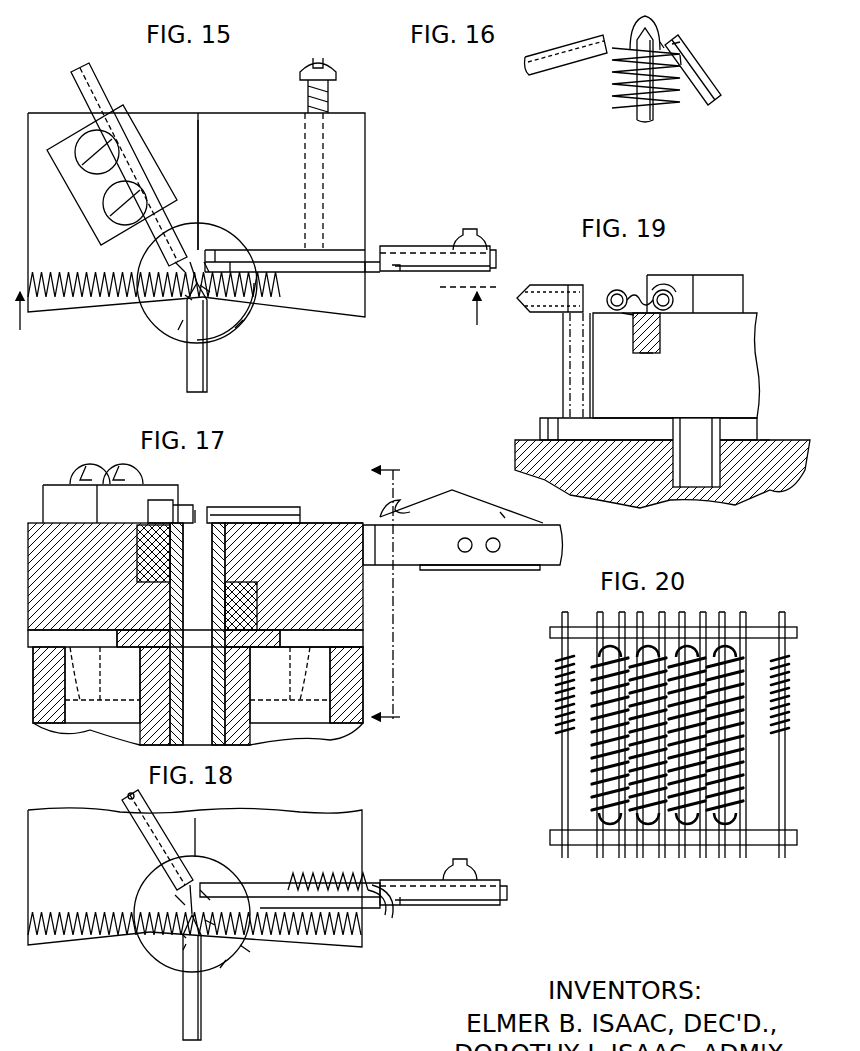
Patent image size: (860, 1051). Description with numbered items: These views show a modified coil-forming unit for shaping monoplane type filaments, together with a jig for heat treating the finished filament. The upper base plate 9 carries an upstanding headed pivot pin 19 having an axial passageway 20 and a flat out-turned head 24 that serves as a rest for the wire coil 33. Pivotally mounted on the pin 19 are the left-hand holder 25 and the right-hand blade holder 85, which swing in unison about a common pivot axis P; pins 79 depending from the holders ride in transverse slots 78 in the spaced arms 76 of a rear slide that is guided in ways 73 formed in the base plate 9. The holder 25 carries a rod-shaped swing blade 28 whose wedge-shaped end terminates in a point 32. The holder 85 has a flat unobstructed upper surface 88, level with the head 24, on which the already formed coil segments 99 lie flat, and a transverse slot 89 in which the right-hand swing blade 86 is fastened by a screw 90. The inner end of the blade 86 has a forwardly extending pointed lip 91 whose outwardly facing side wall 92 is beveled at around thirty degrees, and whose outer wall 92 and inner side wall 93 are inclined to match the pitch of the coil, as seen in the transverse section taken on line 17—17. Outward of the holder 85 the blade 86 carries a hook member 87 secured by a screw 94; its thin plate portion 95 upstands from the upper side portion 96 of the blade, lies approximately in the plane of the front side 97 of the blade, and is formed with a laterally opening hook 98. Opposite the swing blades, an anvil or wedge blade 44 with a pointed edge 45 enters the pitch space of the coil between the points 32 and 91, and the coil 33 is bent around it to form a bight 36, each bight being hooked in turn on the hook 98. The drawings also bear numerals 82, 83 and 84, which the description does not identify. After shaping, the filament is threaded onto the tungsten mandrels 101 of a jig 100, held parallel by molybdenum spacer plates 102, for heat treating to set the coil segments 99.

In FIG. 19, the upper base plate 9 is at (762, 492).
In FIG. 15, the section line 17— 17 is at (254, 320).
In FIG. 17, the pivot pin 19 is at (222, 742).
In FIG. 17, the axial passageway 20 is at (197, 634).
In FIG. 15, the head 24 is at (187, 345).
In FIG. 17, the head 24 is at (248, 510).
In FIG. 18, the head 24 is at (245, 951).
In FIG. 15, the holder 25 is at (52, 112).
In FIG. 17, the holder 25 is at (33, 522).
In FIG. 18, the holder 25 is at (75, 815).
In FIG. 15, the swing blade 28 is at (165, 250).
In FIG. 16, the swing blade 28 is at (557, 62).
In FIG. 17, the swing blade 28 is at (160, 500).
In FIG. 18, the swing blade 28 is at (140, 833).
In FIG. 15, the point 32 is at (195, 290).
In FIG. 17, the point 32 is at (197, 634).
In FIG. 18, the point 32 is at (175, 896).
In FIG. 15, the wire coil 33 is at (73, 300).
In FIG. 16, the wire coil 33 is at (615, 96).
In FIG. 18, the wire coil 33 is at (194, 923).
In FIG. 16, the bight 36 is at (643, 26).
In FIG. 19, the bight 36 is at (634, 315).
In FIG. 18, the bight 36 is at (382, 908).
In FIG. 15, the anvil 44 is at (208, 371).
In FIG. 16, the anvil 44 is at (652, 106).
In FIG. 19, the anvil 44 is at (547, 287).
In FIG. 18, the anvil 44 is at (203, 1004).
In FIG. 15, the edge 45 is at (190, 300).
In FIG. 19, the edge 45 is at (590, 294).
In FIG. 18, the edge 45 is at (185, 936).
In FIG. 17, the ways 73 is at (75, 730).
In FIG. 19, the arms 76 is at (755, 446).
In FIG. 17, the arms 76 is at (103, 712).
In FIG. 19, the slots 78 is at (720, 476).
In FIG. 17, the slots 78 is at (70, 648).
In FIG. 19, the pins 79 is at (722, 431).
In FIG. 17, the pins 79 is at (103, 642).
In FIG. 15, the knife portion 82 is at (178, 330).
In FIG. 19, the knife portion 82 is at (575, 288).
In FIG. 18, the knife portion 82 is at (183, 951).
In FIG. 20, the end spring 83 is at (557, 700).
In FIG. 20, the coil spring 84 is at (590, 788).
In FIG. 15, the blade holder 85 is at (367, 143).
In FIG. 19, the blade holder 85 is at (745, 365).
In FIG. 17, the blade holder 85 is at (320, 525).
In FIG. 18, the blade holder 85 is at (352, 826).
In FIG. 15, the swing blade 86 is at (255, 250).
In FIG. 16, the swing blade 86 is at (709, 73).
In FIG. 19, the swing blade 86 is at (661, 336).
In FIG. 17, the swing blade 86 is at (283, 506).
In FIG. 18, the swing blade 86 is at (262, 884).
In FIG. 15, the hook member 87 is at (421, 246).
In FIG. 17, the hook member 87 is at (471, 497).
In FIG. 18, the hook member 87 is at (441, 877).
In FIG. 15, the upper surface 88 is at (256, 128).
In FIG. 19, the upper surface 88 is at (745, 301).
In FIG. 17, the upper surface 88 is at (297, 523).
In FIG. 15, the slot 89 is at (370, 262).
In FIG. 19, the slot 89 is at (652, 354).
In FIG. 15, the screw 90 is at (326, 104).
In FIG. 15, the lip 91 is at (205, 290).
In FIG. 16, the lip 91 is at (663, 40).
In FIG. 17, the lip 91 is at (212, 523).
In FIG. 18, the lip 91 is at (215, 926).
In FIG. 15, the outer side wall 92 is at (210, 262).
In FIG. 16, the outer side wall 92 is at (682, 56).
In FIG. 17, the outer side wall 92 is at (215, 520).
In FIG. 18, the outer side wall 92 is at (205, 906).
In FIG. 15, the inner side wall 93 is at (200, 255).
In FIG. 16, the inner side wall 93 is at (681, 43).
In FIG. 17, the inner side wall 93 is at (200, 523).
In FIG. 18, the inner side wall 93 is at (195, 886).
In FIG. 15, the screw 94 is at (478, 235).
In FIG. 17, the screw 94 is at (465, 553).
In FIG. 18, the screw 94 is at (456, 878).
In FIG. 15, the plate portion 95 is at (430, 272).
In FIG. 17, the plate portion 95 is at (440, 506).
In FIG. 18, the plate portion 95 is at (462, 906).
In FIG. 17, the upper side portion 96 is at (485, 520).
In FIG. 15, the front side 97 is at (492, 267).
In FIG. 18, the front side 97 is at (507, 902).
In FIG. 15, the hook 98 is at (392, 272).
In FIG. 19, the hook 98 is at (628, 291).
In FIG. 17, the hook 98 is at (386, 510).
In FIG. 18, the hook 98 is at (401, 906).
In FIG. 19, the coil segments 99 is at (671, 289).
In FIG. 18, the coil segments 99 is at (325, 876).
In FIG. 20, the jig 100 is at (558, 759).
In FIG. 20, the mandrels 101 is at (566, 858).
In FIG. 20, the spacer plates 102 is at (550, 632).
In FIG. 15, the pivot axis P is at (247, 318).
In FIG. 18, the pivot axis P is at (185, 906).